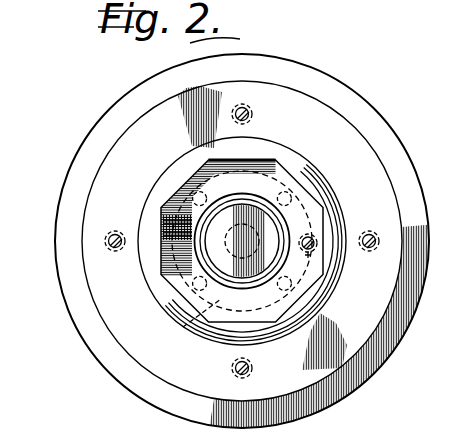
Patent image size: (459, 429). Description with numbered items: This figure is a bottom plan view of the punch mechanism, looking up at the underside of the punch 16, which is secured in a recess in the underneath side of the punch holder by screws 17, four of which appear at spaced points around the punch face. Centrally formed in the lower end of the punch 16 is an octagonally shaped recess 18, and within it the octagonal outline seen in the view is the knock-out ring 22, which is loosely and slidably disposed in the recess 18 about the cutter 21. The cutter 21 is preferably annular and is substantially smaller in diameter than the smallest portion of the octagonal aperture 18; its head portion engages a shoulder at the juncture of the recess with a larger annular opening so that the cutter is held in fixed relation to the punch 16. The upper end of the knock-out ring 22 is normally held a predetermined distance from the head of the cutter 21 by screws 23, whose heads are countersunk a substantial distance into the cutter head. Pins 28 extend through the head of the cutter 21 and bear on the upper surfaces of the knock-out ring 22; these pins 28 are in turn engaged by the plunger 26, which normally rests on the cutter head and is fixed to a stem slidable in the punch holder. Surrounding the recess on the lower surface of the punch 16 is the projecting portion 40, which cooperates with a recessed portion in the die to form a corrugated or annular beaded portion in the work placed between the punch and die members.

The punch 16 is at (122, 158).
The screws 17 is at (117, 232).
The octagonally shaped recess 18 is at (317, 265).
The cutter 21 is at (253, 212).
The knock-out ring 22 is at (310, 213).
The screws 23 is at (158, 253).
The plunger 26 is at (183, 327).
The pins 28 is at (197, 191).
The projecting portion 40 is at (325, 312).